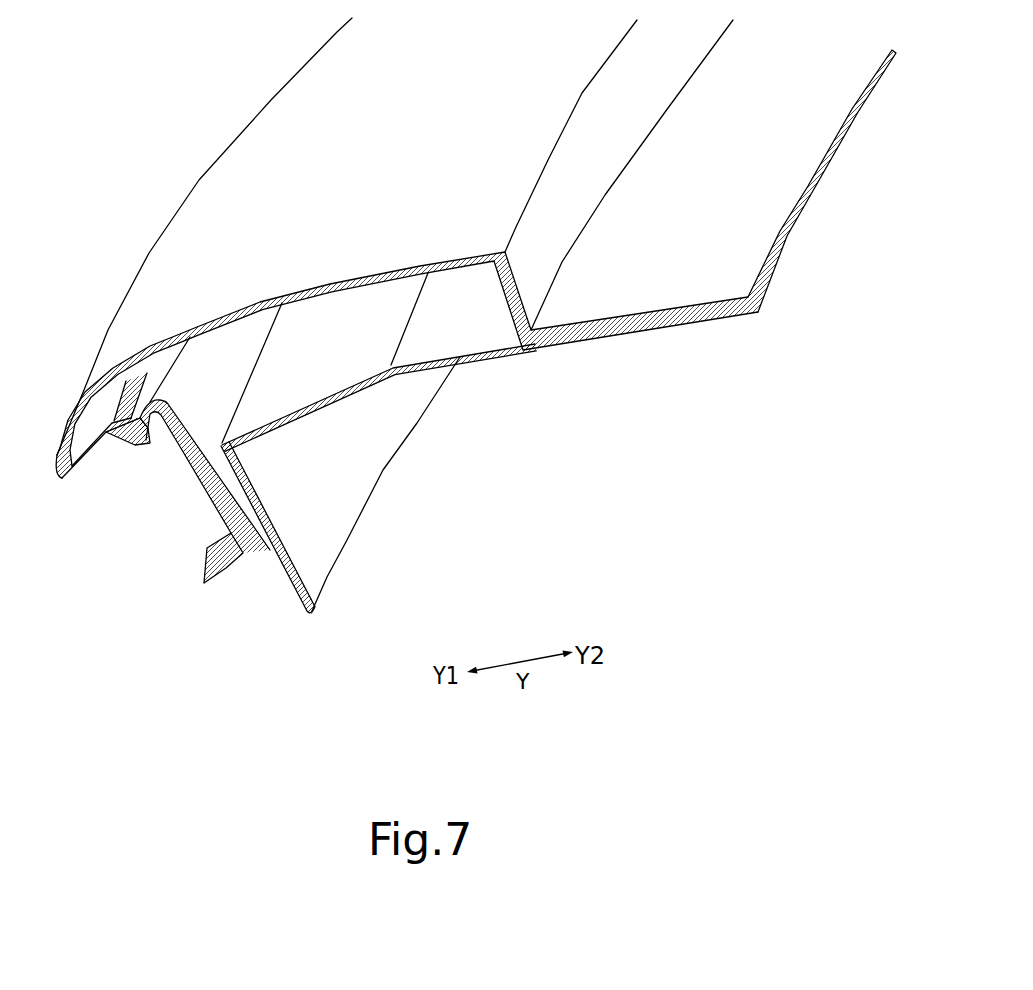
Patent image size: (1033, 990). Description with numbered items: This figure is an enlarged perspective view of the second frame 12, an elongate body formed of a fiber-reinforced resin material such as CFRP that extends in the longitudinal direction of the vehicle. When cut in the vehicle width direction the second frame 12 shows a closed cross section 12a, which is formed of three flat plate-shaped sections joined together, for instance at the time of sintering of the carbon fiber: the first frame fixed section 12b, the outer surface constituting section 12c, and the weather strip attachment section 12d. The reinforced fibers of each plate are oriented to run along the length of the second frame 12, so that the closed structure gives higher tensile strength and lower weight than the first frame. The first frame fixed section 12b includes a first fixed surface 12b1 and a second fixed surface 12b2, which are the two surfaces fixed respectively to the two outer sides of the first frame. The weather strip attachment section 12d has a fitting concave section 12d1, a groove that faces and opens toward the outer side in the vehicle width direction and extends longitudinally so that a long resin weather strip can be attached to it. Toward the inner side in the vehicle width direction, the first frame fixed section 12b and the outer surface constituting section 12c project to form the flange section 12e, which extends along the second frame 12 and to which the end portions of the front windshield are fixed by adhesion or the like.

The second frame 12 is at (463, 334).
The closed cross section 12a is at (320, 283).
The first frame fixed section 12b is at (378, 479).
The first fixed surface 12b1 is at (313, 417).
The second fixed surface 12b2 is at (290, 512).
The outer surface constituting section 12c is at (243, 293).
The weather strip attachment section 12d is at (146, 509).
The fitting concave section 12d1 is at (200, 506).
The flange section 12e is at (720, 265).